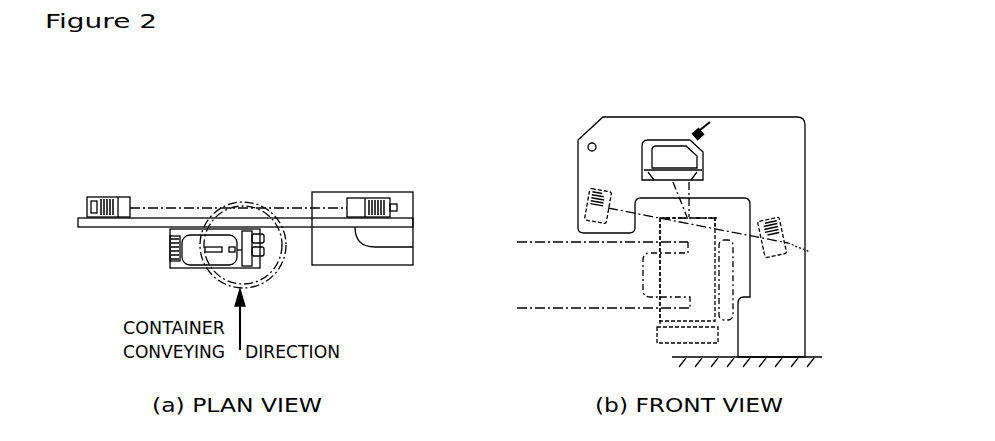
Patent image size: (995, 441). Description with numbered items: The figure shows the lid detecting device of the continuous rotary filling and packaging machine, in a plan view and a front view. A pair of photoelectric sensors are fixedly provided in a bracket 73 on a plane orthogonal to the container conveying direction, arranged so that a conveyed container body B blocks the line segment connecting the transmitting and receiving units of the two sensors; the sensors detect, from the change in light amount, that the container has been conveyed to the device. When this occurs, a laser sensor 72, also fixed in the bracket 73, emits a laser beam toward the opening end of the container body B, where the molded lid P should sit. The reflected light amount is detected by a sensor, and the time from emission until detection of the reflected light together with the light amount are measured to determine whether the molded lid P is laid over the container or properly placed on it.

The laser sensor 72 is at (175, 262).
The bracket 73 is at (382, 263).
The molded lid P is at (708, 215).
The container A is at (268, 282).
The container body B is at (655, 313).